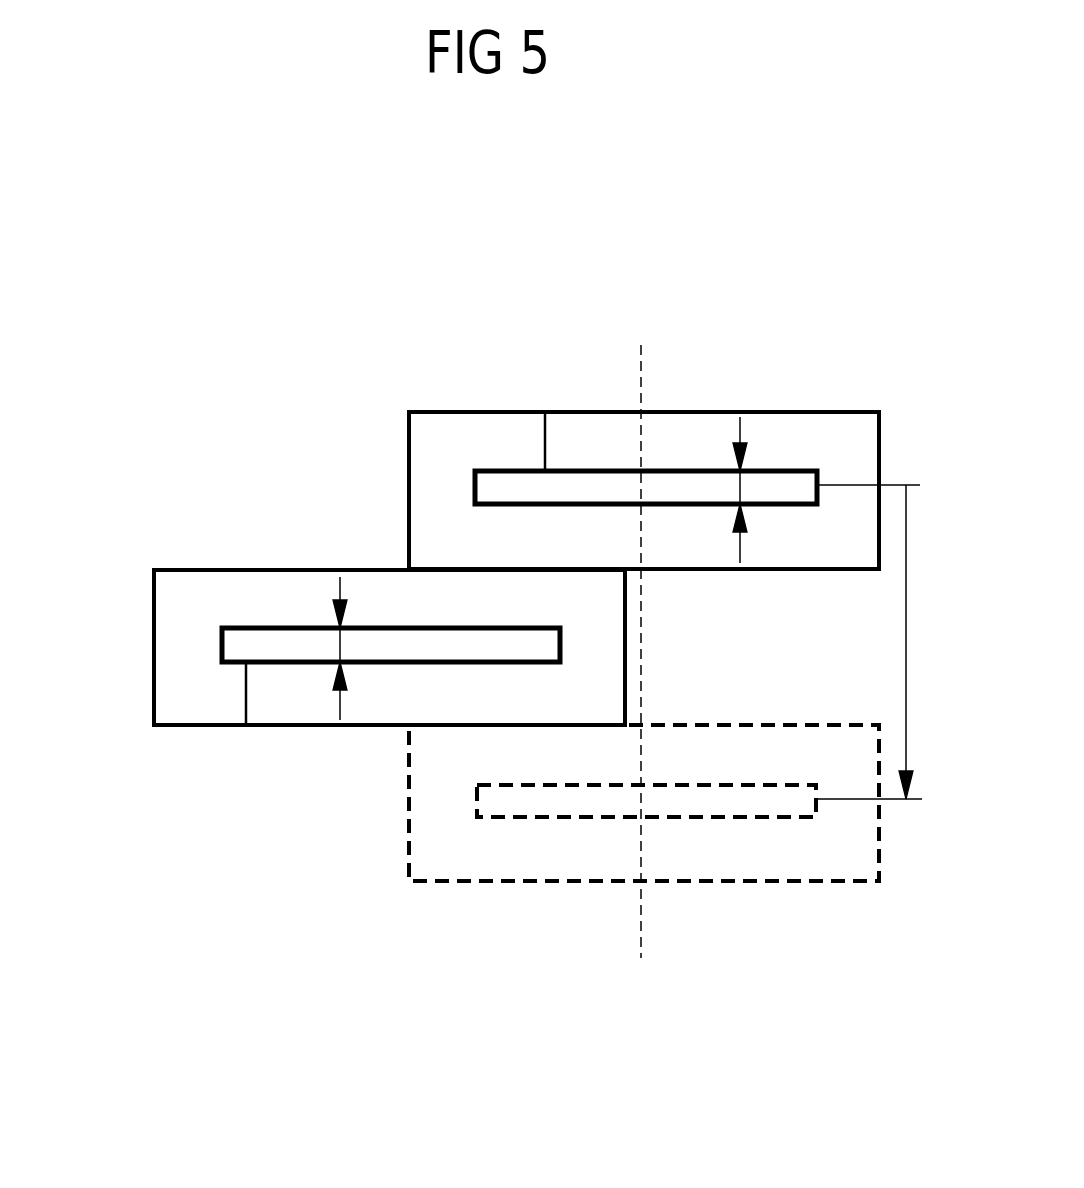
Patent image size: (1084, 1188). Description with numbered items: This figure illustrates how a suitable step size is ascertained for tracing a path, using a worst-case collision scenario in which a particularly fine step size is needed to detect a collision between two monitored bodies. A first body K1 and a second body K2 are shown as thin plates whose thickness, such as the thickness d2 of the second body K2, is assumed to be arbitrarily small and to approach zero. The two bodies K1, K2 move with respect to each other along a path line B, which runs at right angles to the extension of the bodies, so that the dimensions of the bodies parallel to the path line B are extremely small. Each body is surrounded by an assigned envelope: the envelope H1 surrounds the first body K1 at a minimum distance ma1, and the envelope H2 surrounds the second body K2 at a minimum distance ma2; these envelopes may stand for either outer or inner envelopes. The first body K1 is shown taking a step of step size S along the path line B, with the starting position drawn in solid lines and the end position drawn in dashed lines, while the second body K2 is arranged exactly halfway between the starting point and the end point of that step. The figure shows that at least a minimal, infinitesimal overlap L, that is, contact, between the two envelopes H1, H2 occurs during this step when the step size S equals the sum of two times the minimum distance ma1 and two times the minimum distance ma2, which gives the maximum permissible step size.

The envelope H1 is at (863, 410).
The envelope H2 is at (152, 632).
The first body K1 is at (577, 471).
The second body K2 is at (310, 663).
The minimum distance ma1 is at (543, 440).
The minimum distance ma2 is at (246, 695).
The thickness d2 is at (741, 485).
The overlap L is at (572, 570).
The step size S is at (875, 642).
The path line B is at (642, 925).